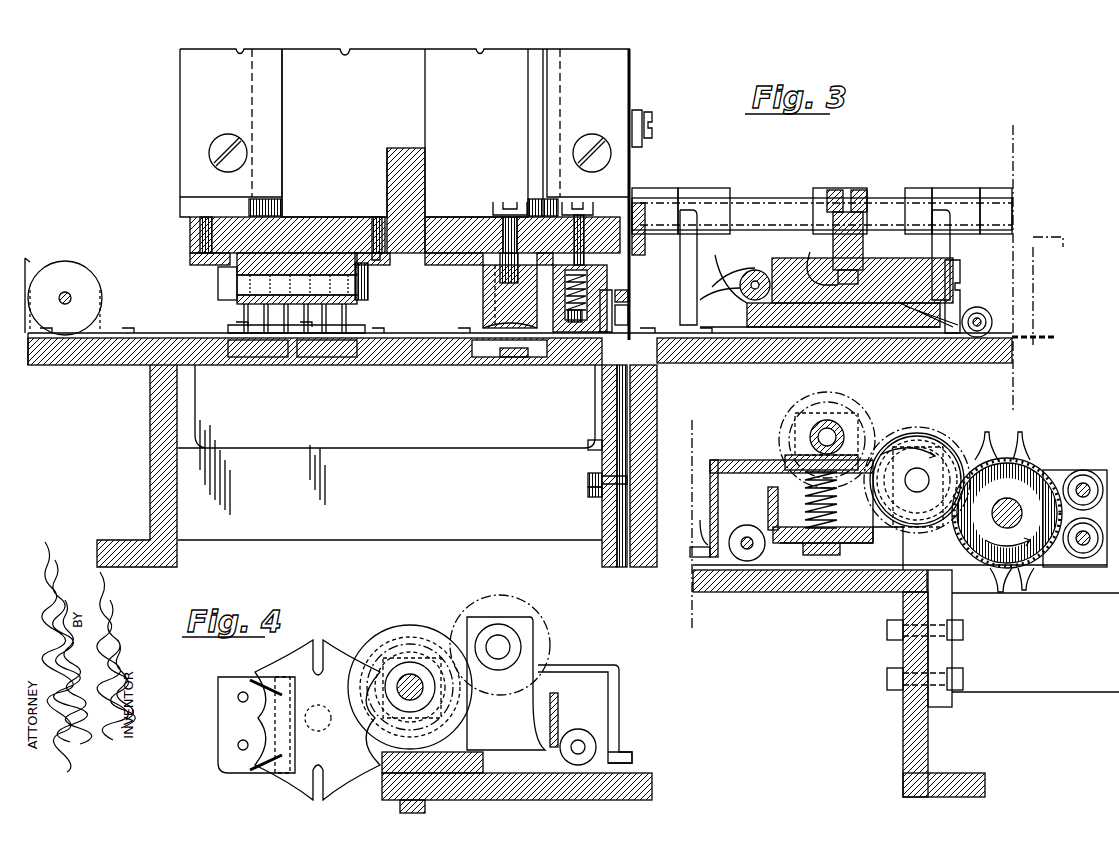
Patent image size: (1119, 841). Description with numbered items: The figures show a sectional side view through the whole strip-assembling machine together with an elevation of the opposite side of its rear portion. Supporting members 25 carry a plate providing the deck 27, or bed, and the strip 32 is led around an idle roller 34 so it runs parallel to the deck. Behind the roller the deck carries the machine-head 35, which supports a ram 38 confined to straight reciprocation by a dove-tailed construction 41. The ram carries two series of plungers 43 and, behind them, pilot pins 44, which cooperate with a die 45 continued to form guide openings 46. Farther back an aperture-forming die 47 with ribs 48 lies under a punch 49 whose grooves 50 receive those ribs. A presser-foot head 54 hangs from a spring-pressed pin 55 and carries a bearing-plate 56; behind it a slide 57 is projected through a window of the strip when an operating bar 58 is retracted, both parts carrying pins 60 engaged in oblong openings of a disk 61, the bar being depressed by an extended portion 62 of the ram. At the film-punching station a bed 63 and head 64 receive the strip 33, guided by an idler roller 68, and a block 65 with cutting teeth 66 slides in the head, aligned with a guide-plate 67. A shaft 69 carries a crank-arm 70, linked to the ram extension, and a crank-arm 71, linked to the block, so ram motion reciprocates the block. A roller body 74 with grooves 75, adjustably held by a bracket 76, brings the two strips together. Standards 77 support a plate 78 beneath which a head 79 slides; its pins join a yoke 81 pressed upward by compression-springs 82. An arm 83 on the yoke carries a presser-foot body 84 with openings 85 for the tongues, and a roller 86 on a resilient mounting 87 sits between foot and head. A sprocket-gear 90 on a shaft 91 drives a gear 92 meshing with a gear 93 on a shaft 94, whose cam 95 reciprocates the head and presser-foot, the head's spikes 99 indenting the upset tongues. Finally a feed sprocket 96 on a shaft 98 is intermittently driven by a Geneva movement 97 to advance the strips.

In FIG. 3, the supporting members 25 is at (150, 415).
In FIG. 3, the deck 27 is at (414, 365).
In FIG. 4, the deck 27 is at (655, 788).
In FIG. 3, the strip 32 is at (28, 262).
In FIG. 3, the strip 33 is at (727, 270).
In FIG. 3, the idle roller 34 is at (95, 292).
In FIG. 3, the machine-head 35 is at (405, 123).
In FIG. 3, the ram 38 is at (412, 151).
In FIG. 3, the dove-tailed construction 41 is at (268, 203).
In FIG. 3, the plungers 43 is at (242, 317).
In FIG. 3, the pins 44 is at (342, 319).
In FIG. 3, the die 45 is at (258, 357).
In FIG. 3, the guide openings 46 is at (345, 357).
In FIG. 3, the die 47 is at (514, 357).
In FIG. 3, the tongues or ribs 48 is at (484, 357).
In FIG. 3, the punch 49 is at (503, 296).
In FIG. 3, the grooves 50 is at (500, 268).
In FIG. 3, the head 54 is at (585, 332).
In FIG. 3, the spring-pressed pin 55 is at (576, 202).
In FIG. 3, the bearing-plate 56 is at (612, 315).
In FIG. 3, the slide 57 is at (585, 434).
In FIG. 3, the operating bar 58 is at (628, 312).
In FIG. 3, the pins 60 is at (600, 492).
In FIG. 3, the disk 61 is at (600, 453).
In FIG. 3, the extended portion 62 is at (614, 194).
In FIG. 3, the bed 63 is at (768, 327).
In FIG. 3, the head 64 is at (905, 280).
In FIG. 3, the block 65 is at (860, 250).
In FIG. 3, the punching or cutting teeth 66 is at (819, 261).
In FIG. 3, the guide-plate 67 is at (950, 300).
In FIG. 3, the idler roller 68 is at (757, 272).
In FIG. 3, the shaft 69 is at (788, 200).
In FIG. 3, the crank-arm 70 is at (645, 243).
In FIG. 3, the crank-arm 71 is at (840, 190).
In FIG. 3, the roller body 74 is at (982, 312).
In FIG. 3, the grooves 75 is at (1000, 327).
In FIG. 3, the bracket 76 is at (954, 270).
In FIG. 3, the standards 77 is at (875, 545).
In FIG. 4, the standards 77 is at (463, 695).
In FIG. 3, the plate 78 is at (852, 535).
In FIG. 3, the head 79 is at (836, 545).
In FIG. 3, the yoke 81 is at (800, 470).
In FIG. 3, the compression-springs 82 is at (808, 478).
In FIG. 3, the arm 83 is at (738, 462).
In FIG. 4, the arm 83 is at (592, 668).
In FIG. 3, the presser-foot body 84 is at (694, 551).
In FIG. 4, the presser-foot body 84 is at (633, 751).
In FIG. 3, the openings 85 is at (699, 527).
In FIG. 3, the roller 86 is at (746, 535).
In FIG. 4, the roller 86 is at (583, 735).
In FIG. 3, the resilient mounting 87 is at (768, 505).
In FIG. 4, the resilient mounting 87 is at (558, 710).
In FIG. 3, the sprocket-gear 90 is at (908, 440).
In FIG. 3, the shaft 91 is at (917, 492).
In FIG. 4, the shaft 91 is at (410, 675).
In FIG. 3, the gear 92 is at (940, 440).
In FIG. 4, the gear 92 is at (380, 645).
In FIG. 3, the gear 93 is at (790, 412).
In FIG. 4, the gear 93 is at (530, 605).
In FIG. 3, the shaft 94 is at (790, 430).
In FIG. 4, the shaft 94 is at (512, 645).
In FIG. 3, the cam 95 is at (828, 420).
In FIG. 3, the sprocket 96 is at (1040, 470).
In FIG. 4, the sprocket 96 is at (310, 672).
In FIG. 3, the Geneva movement 97 is at (993, 440).
In FIG. 4, the Geneva movement 97 is at (317, 720).
In FIG. 3, the shaft 98 is at (1007, 505).
In FIG. 4, the shaft 98 is at (318, 729).
In FIG. 3, the indenting members or spikes 99 is at (822, 555).